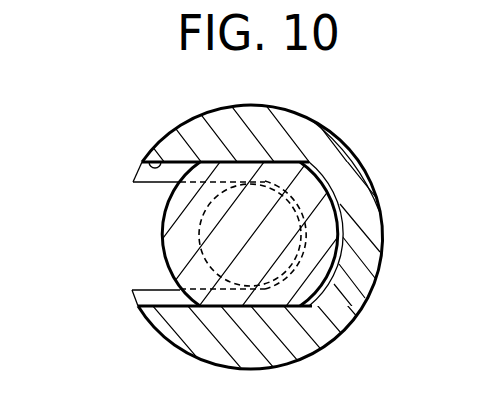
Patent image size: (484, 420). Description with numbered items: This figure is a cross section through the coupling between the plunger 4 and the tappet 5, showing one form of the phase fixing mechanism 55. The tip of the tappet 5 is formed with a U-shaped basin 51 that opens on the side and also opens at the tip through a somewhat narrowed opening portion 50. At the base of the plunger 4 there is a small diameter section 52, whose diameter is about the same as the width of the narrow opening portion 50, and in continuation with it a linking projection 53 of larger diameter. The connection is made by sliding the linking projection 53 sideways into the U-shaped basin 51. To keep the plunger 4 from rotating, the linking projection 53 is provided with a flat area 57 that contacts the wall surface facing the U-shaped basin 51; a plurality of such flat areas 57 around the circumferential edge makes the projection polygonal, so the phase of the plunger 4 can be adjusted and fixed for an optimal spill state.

The plunger 4 is at (163, 214).
The tappet 5 is at (348, 180).
The opening portion 50 is at (150, 290).
The U-shaped basin 51 is at (146, 160).
The small diameter section 52 is at (201, 250).
The linking projection 53 is at (327, 229).
The phase fixing mechanism 55 is at (128, 170).
The flat area 57 is at (285, 162).